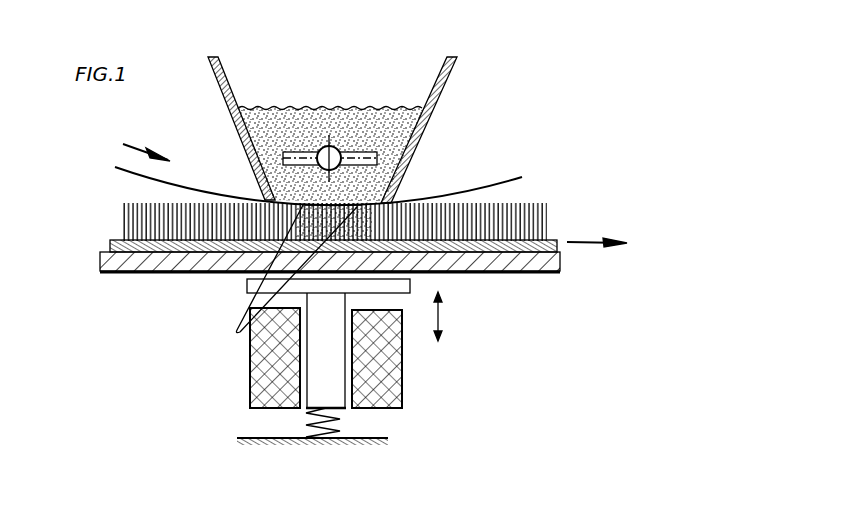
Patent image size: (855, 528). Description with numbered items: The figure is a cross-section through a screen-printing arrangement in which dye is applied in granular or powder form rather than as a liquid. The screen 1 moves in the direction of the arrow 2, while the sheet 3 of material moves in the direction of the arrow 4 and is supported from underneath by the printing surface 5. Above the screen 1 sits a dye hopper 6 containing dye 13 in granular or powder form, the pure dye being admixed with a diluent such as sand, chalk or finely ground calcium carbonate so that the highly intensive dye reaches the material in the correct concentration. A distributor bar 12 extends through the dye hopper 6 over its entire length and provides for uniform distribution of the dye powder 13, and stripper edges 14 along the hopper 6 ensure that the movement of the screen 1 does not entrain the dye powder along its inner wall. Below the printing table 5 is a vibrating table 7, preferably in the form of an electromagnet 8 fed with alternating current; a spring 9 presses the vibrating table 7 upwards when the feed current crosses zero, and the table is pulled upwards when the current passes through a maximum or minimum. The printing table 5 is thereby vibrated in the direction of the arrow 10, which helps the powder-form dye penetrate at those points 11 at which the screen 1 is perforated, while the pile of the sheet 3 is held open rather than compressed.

The screen 1 is at (501, 184).
The arrow 2 is at (132, 146).
The sheet of material 3 is at (152, 232).
The arrow 4 is at (593, 238).
The printing surface 5 is at (175, 257).
The dye hopper 6 is at (427, 90).
The vibrating table 7 is at (250, 282).
The electromagnet 8 is at (393, 370).
The spring 9 is at (341, 429).
The arrow 10 is at (446, 319).
The points 11 is at (286, 278).
The distributor bar 12 is at (290, 151).
The dye 13 is at (378, 124).
The stripper edges 14 is at (264, 188).